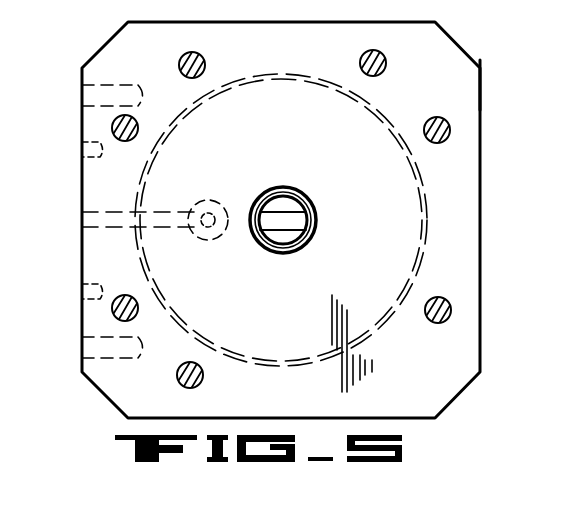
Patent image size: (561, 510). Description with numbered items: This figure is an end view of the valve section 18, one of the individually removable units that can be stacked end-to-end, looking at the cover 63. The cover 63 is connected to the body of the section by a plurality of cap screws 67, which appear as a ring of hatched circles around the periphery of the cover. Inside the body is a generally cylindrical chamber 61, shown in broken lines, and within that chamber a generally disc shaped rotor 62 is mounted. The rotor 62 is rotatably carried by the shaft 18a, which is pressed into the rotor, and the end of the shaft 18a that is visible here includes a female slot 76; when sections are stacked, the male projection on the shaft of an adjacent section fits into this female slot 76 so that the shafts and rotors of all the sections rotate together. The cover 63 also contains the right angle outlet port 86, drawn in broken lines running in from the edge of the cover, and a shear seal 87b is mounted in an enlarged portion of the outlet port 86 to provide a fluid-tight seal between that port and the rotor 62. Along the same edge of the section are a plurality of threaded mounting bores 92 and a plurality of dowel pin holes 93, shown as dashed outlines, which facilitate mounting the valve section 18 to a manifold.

The valve section 18 is at (484, 152).
The shaft 18a is at (296, 194).
The female slot 76 is at (305, 210).
The shear seal 87b is at (231, 194).
The outlet port 86 is at (82, 218).
The threaded mounting bores 92 is at (82, 90).
The dowel pin holes 93 is at (82, 148).
The cap screws 67 is at (136, 118).
The cover 63 is at (480, 85).
The cylindrical chamber 61 is at (420, 172).
The rotor 62 is at (426, 228).